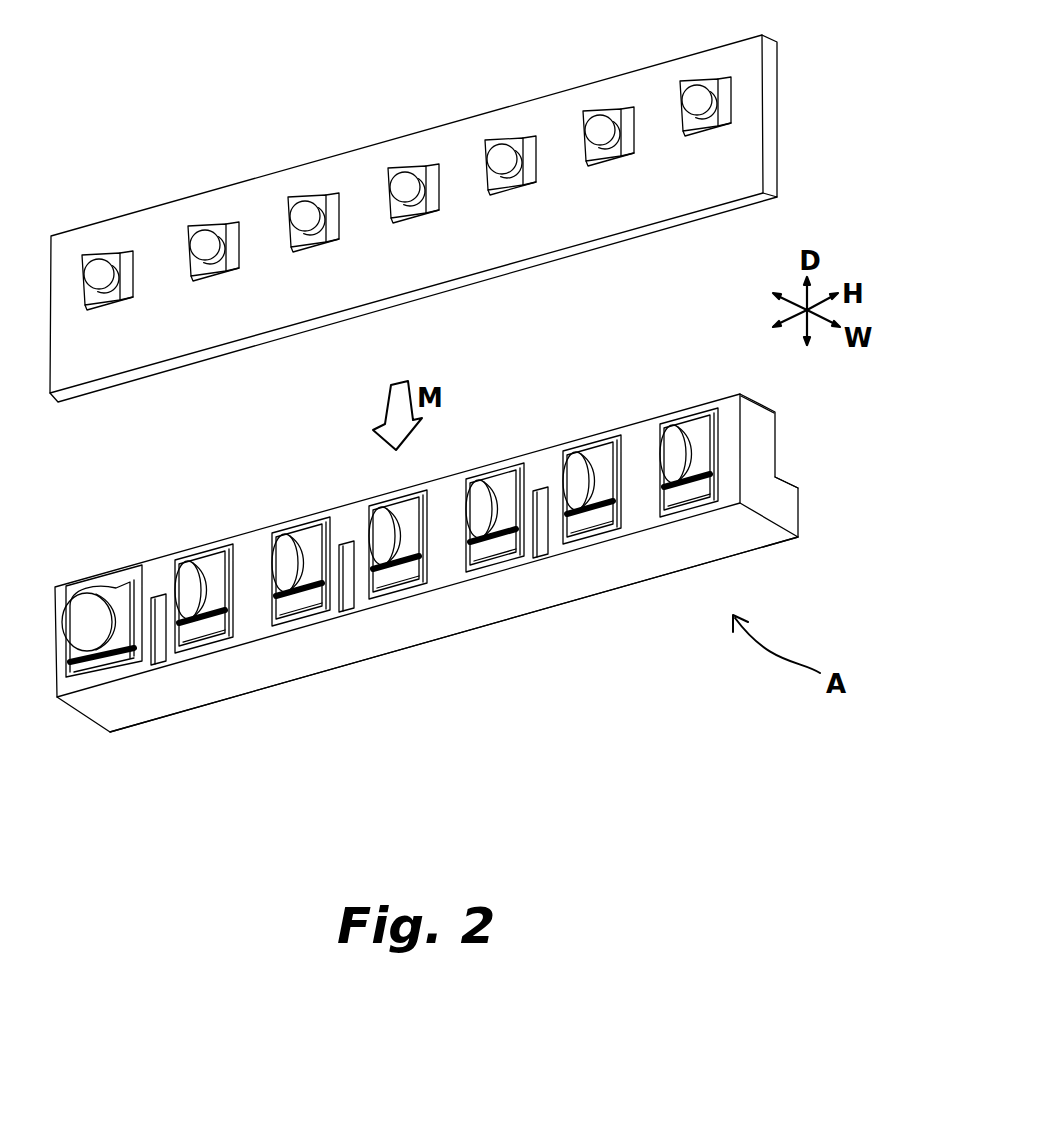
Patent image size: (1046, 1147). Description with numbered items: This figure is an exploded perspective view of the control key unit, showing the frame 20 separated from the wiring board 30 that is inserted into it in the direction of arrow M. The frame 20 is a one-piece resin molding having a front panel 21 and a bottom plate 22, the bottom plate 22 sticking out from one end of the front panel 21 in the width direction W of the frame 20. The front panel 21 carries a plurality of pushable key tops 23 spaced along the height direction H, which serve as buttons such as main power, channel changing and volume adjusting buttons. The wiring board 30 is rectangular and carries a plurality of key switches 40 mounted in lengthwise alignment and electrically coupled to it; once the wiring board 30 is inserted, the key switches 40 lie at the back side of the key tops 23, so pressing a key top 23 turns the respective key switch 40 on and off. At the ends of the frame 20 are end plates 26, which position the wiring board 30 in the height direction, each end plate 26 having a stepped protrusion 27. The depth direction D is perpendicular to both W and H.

The frame 20 is at (677, 398).
The front panel 21 is at (603, 430).
The bottom plate 22 is at (640, 573).
The key tops 23 is at (183, 567).
The end plates 26 is at (765, 440).
The protrusion 27 is at (780, 481).
The wiring board 30 is at (443, 126).
The key switches 40 is at (224, 224).